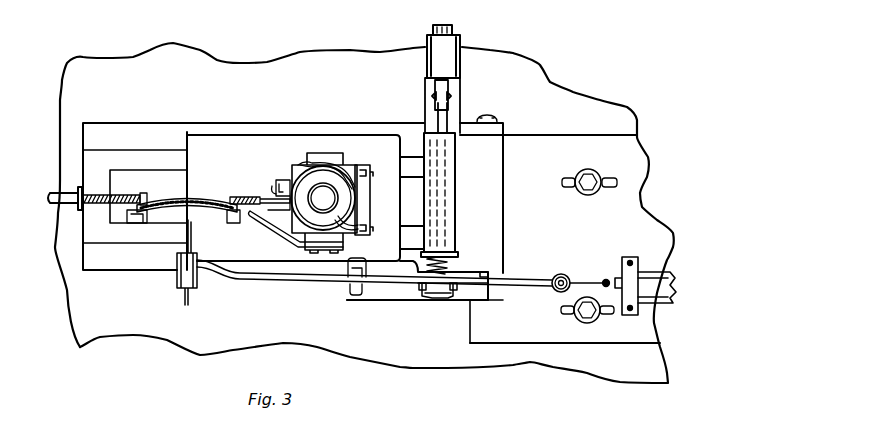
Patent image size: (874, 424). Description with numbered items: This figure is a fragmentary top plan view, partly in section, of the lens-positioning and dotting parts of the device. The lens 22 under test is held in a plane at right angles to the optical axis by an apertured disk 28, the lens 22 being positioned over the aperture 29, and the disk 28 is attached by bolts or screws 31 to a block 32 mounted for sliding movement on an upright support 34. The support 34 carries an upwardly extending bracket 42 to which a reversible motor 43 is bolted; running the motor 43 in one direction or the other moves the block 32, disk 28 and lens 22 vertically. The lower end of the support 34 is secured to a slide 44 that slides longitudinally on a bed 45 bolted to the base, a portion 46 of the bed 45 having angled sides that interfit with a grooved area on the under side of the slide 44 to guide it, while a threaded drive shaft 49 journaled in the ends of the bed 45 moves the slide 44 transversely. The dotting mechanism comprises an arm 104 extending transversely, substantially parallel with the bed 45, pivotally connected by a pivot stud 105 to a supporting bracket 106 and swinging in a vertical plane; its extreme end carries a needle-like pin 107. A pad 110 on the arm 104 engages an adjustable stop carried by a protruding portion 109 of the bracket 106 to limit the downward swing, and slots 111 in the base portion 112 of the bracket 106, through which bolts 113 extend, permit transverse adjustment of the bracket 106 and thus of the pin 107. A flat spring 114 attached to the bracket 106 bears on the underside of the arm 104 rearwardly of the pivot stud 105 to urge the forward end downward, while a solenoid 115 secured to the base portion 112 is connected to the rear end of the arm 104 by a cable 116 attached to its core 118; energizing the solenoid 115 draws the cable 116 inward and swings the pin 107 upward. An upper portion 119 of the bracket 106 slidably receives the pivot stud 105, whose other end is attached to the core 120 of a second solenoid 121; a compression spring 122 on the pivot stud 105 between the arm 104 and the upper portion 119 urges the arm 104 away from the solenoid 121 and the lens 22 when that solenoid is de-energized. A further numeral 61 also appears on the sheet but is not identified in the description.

The lens under test 22 is at (197, 205).
The apertured disk 28 is at (237, 197).
The aperture 29 is at (150, 194).
The bolts or screws 31 is at (277, 187).
The block 32 is at (280, 182).
The upright support 34 is at (324, 158).
The bracket 42 is at (368, 197).
The reversible motor 43 is at (347, 228).
The slide 44 is at (210, 140).
The bed 45 is at (102, 121).
The portion 46 is at (133, 155).
The threaded drive shaft 49 is at (53, 193).
The element 61 is at (99, 408).
The arm 104 is at (305, 288).
The pivot stud 105 is at (433, 302).
The supporting bracket 106 is at (490, 226).
The needle-like pin 107 is at (190, 238).
The protruding portion 109 is at (377, 300).
The pad 110 is at (355, 288).
The slots 111 is at (608, 178).
The base portion 112 is at (633, 215).
The bolts 113 is at (583, 178).
The flat spring 114 is at (482, 300).
The solenoid 115 is at (672, 281).
The cable 116 is at (577, 278).
The core 118 is at (622, 260).
The upper portion 119 is at (457, 182).
The core 120 is at (452, 87).
The second solenoid 121 is at (463, 40).
The compression spring 122 is at (452, 263).